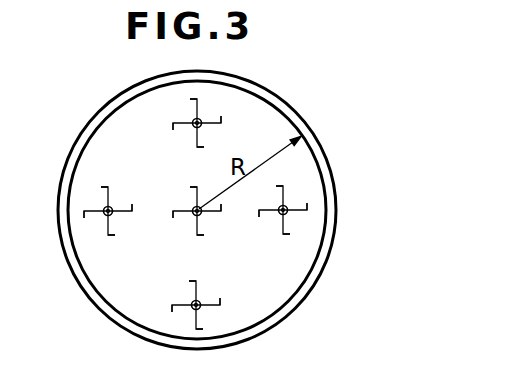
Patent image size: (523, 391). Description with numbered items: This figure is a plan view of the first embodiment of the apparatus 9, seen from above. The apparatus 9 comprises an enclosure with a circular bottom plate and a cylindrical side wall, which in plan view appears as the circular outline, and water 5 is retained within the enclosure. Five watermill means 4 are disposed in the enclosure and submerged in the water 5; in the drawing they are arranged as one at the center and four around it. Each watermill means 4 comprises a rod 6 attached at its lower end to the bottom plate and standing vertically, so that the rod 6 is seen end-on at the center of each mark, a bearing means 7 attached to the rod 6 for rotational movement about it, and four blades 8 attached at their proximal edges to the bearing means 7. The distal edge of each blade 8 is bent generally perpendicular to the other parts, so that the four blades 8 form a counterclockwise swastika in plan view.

The watermill means 4 is at (236, 109).
The water 5 is at (270, 130).
The rod 6 is at (199, 120).
The bearing means 7 is at (194, 120).
The blade 8 is at (194, 121).
The apparatus 9 is at (358, 119).